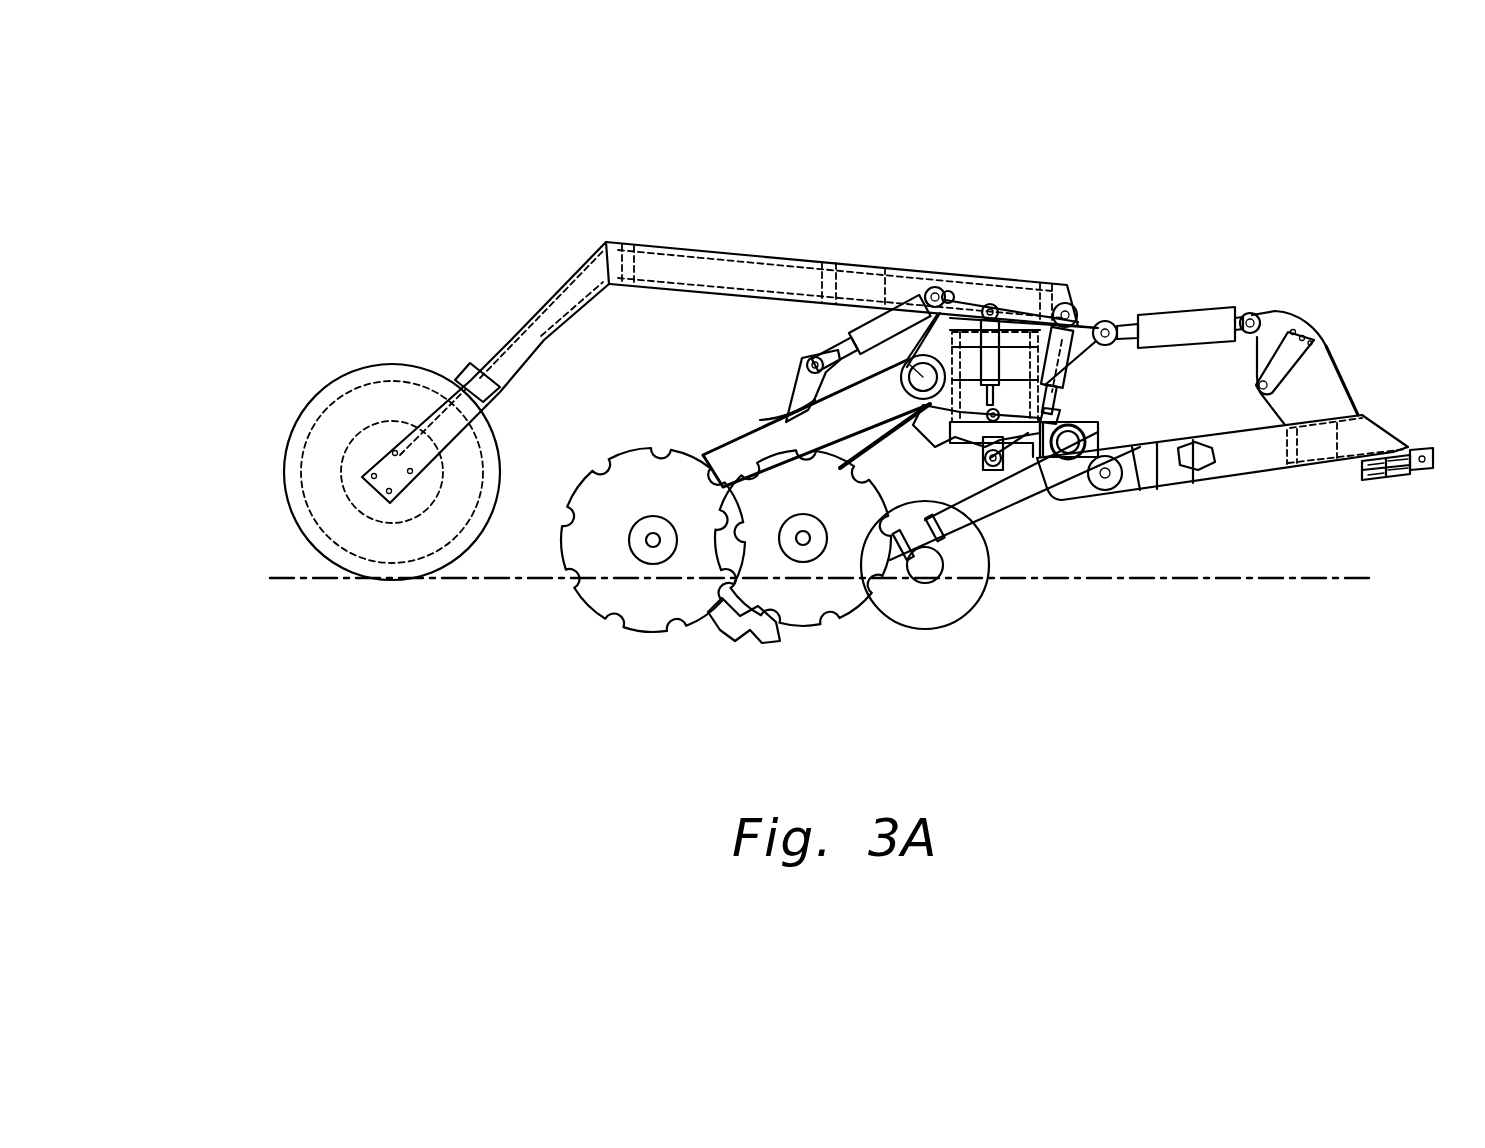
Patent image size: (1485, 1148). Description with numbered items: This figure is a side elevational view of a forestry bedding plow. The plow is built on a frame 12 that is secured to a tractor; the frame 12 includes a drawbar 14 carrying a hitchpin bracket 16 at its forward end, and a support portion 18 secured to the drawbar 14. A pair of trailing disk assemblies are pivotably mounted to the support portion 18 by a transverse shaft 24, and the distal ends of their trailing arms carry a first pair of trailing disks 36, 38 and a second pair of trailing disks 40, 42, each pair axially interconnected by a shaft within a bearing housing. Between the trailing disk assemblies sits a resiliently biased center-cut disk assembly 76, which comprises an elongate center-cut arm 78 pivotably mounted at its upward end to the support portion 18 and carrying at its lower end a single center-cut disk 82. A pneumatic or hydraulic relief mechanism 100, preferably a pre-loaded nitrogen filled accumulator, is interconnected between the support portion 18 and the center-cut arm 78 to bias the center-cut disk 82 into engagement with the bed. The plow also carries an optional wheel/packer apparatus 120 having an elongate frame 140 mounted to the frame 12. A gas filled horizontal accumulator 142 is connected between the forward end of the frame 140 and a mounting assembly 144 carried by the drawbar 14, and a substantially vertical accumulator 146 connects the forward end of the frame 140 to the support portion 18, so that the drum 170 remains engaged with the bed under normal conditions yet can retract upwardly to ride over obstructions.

The frame 12 is at (1127, 500).
The drawbar 14 is at (1257, 477).
The hitchpin bracket 16 is at (1427, 477).
The support portion 18 is at (1050, 498).
The transverse shaft 24 is at (840, 352).
The trailing disk 36 is at (592, 608).
The trailing disk 38 is at (690, 627).
The trailing disk 40 is at (801, 630).
The trailing disk 42 is at (767, 640).
The center-cut disk assembly 76 is at (968, 613).
The center-cut arm 78 is at (1000, 500).
The center-cut disk 82 is at (880, 618).
The relief mechanism 100 is at (1020, 335).
The wheel/packer apparatus 120 is at (530, 317).
The elongate frame 140 is at (1050, 283).
The horizontal accumulator 142 is at (1213, 307).
The mounting assembly 144 is at (1335, 353).
The vertical accumulator 146 is at (1073, 358).
The drum 170 is at (287, 480).